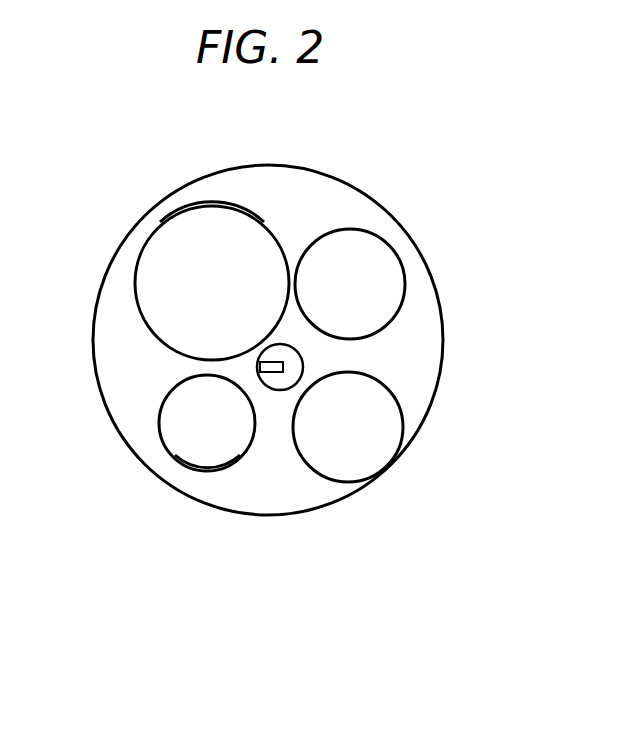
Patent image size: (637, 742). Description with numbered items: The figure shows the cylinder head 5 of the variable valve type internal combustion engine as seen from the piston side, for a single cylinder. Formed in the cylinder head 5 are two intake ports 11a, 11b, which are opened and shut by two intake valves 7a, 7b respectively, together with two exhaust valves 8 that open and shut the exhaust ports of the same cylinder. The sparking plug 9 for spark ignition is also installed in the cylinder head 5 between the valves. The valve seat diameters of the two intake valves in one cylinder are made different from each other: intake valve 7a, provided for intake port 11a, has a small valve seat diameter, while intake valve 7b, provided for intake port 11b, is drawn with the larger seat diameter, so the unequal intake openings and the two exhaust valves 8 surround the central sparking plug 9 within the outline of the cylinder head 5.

The cylinder head 5 is at (312, 194).
The intake valve 7a is at (174, 420).
The intake valve 7b is at (174, 249).
The exhaust valve 8 is at (377, 419).
The sparking plug 9 is at (280, 391).
The intake port 11a is at (200, 453).
The intake port 11b is at (222, 223).